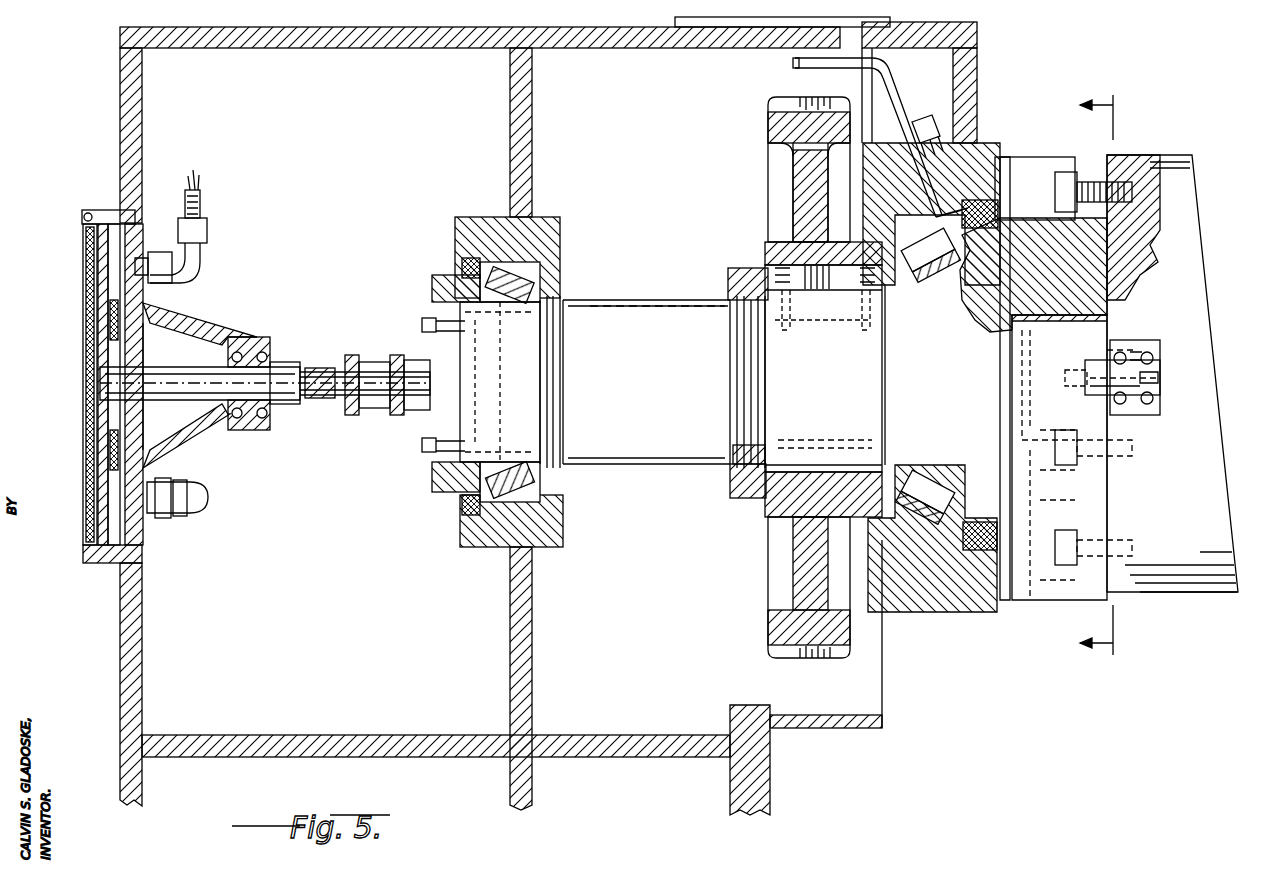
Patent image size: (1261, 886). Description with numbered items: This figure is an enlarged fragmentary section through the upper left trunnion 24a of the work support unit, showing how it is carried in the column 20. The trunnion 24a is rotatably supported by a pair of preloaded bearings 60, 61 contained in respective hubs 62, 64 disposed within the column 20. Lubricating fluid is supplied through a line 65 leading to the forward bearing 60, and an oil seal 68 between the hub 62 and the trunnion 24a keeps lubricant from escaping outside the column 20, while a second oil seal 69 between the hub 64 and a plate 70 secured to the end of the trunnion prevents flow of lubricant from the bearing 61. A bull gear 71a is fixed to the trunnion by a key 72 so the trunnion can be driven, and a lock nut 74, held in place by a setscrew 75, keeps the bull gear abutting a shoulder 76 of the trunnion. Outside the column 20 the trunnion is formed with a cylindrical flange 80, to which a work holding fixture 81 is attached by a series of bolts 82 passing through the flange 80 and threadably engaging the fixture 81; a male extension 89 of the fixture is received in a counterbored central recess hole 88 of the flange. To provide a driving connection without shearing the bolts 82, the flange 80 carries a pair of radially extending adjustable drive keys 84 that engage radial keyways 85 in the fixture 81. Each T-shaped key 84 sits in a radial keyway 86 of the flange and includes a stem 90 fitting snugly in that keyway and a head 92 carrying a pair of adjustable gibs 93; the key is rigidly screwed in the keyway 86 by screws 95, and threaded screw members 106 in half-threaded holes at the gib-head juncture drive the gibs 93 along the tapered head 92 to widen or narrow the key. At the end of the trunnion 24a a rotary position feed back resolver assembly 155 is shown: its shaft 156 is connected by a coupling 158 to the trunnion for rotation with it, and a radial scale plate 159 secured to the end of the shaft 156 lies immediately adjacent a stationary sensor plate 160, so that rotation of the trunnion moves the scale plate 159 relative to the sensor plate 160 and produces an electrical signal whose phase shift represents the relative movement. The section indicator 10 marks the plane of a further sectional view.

The column 20 is at (121, 104).
The line 65 is at (794, 63).
The hub 64 is at (560, 222).
The plate 70 is at (433, 290).
The second oil seal 69 is at (466, 262).
The bearing 61 is at (528, 290).
The trunnion 24a is at (690, 478).
The shoulder 76 is at (758, 420).
The lock nut 74 is at (730, 290).
The setscrew 75 is at (745, 478).
The bull gear 71a is at (782, 130).
The key 72 is at (800, 275).
The hub 62 is at (928, 614).
The bearing 60 is at (930, 495).
The oil seal 68 is at (965, 548).
The cylindrical flange 80 is at (1022, 168).
The bolt 82 is at (1088, 180).
The section line 10 is at (1115, 376).
The counterbored central recess hole 88 is at (1033, 312).
The male extension 89 is at (1072, 316).
The work holding fixture 81 is at (1185, 157).
The adjustable drive key 84 is at (1165, 345).
The radial keyway 85 is at (1153, 355).
The threaded screw member 106 is at (1147, 352).
The stem 90 is at (1088, 365).
The radial keyway 86 is at (1082, 378).
The adjustable gib 93 is at (1183, 352).
The head 92 is at (1160, 376).
The screw 95 is at (1165, 394).
The stationary sensor plate 160 is at (85, 245).
The radial scale plate 159 is at (83, 302).
The rotary position feed back resolver assembly 155 is at (228, 458).
The shaft 156 is at (280, 395).
The coupling 158 is at (362, 360).